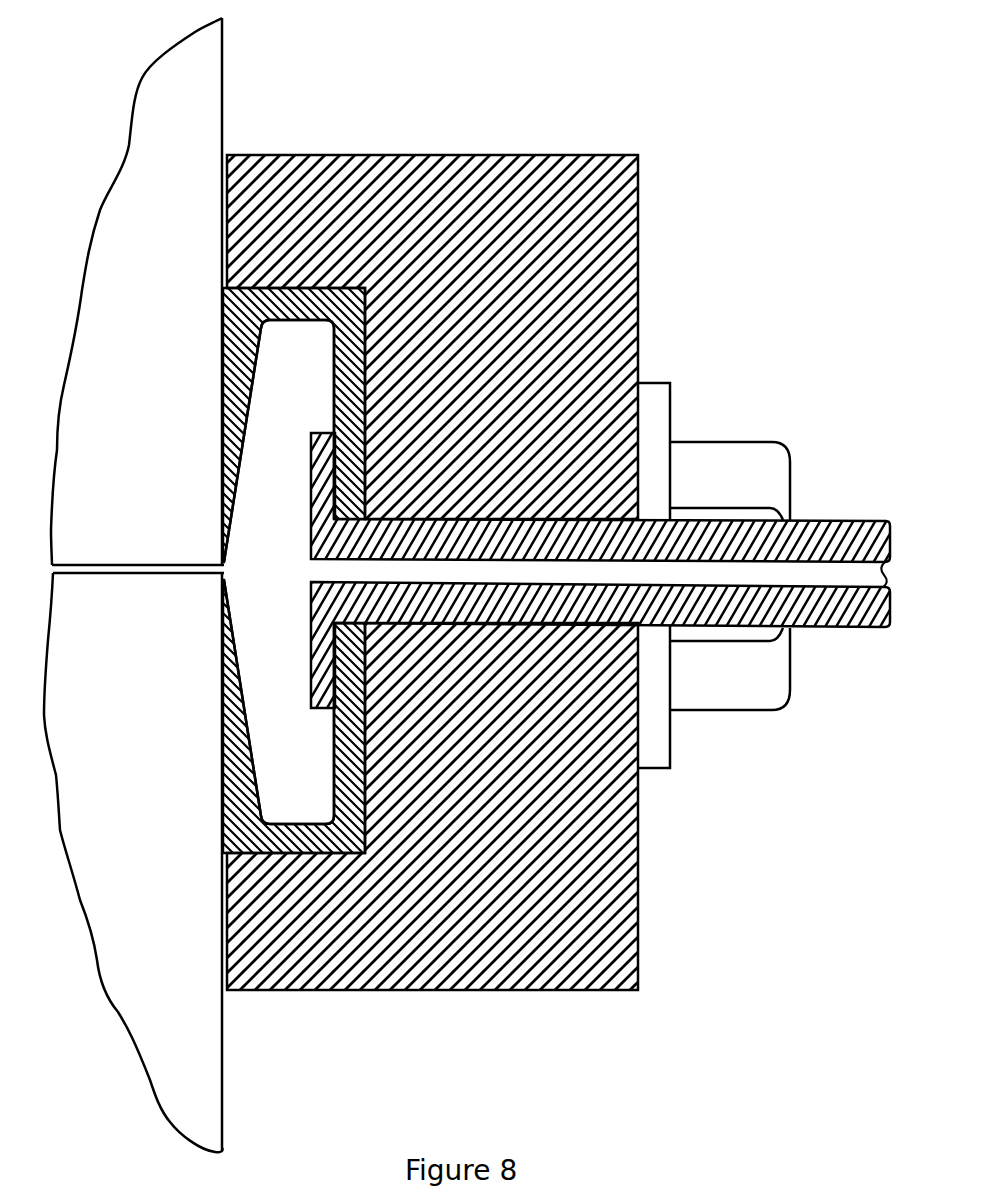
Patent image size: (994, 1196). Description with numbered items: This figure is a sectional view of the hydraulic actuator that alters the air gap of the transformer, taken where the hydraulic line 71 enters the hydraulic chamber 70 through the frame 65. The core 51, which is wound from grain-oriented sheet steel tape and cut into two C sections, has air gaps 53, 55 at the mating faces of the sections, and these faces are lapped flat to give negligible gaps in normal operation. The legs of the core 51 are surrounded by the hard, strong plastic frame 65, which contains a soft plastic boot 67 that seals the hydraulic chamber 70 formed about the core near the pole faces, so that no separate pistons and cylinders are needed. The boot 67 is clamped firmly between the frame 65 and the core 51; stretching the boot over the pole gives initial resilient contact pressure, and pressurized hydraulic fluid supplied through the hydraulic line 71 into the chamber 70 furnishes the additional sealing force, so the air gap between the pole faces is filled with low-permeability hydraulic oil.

The core 51 is at (222, 100).
The air gap 53 is at (138, 599).
The air gap 55 is at (70, 570).
The plastic frame 65 is at (640, 174).
The boot 67 is at (331, 324).
The hydraulic chamber 70 is at (281, 589).
The hydraulic line 71 is at (821, 520).